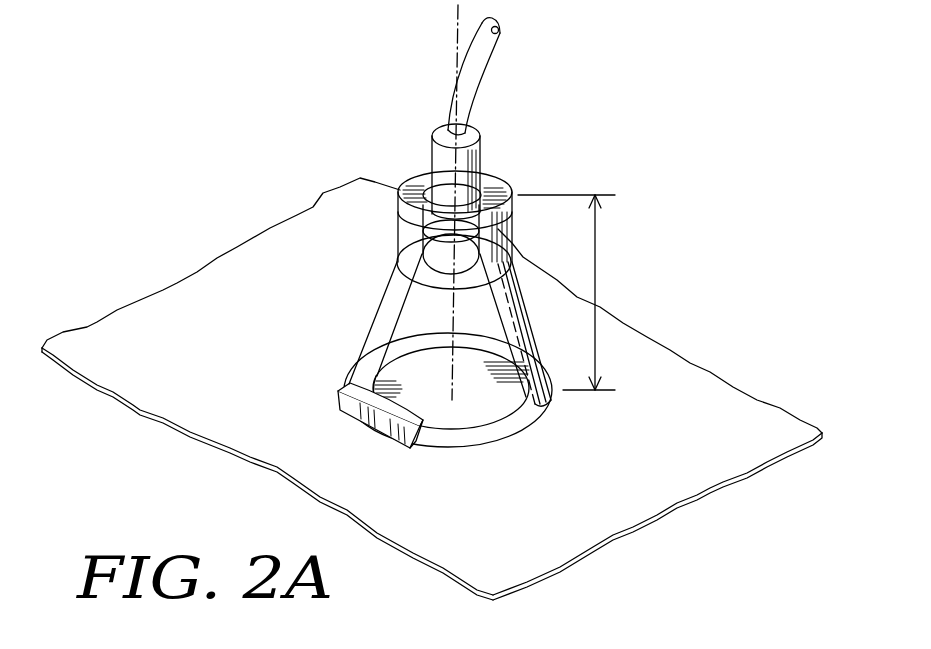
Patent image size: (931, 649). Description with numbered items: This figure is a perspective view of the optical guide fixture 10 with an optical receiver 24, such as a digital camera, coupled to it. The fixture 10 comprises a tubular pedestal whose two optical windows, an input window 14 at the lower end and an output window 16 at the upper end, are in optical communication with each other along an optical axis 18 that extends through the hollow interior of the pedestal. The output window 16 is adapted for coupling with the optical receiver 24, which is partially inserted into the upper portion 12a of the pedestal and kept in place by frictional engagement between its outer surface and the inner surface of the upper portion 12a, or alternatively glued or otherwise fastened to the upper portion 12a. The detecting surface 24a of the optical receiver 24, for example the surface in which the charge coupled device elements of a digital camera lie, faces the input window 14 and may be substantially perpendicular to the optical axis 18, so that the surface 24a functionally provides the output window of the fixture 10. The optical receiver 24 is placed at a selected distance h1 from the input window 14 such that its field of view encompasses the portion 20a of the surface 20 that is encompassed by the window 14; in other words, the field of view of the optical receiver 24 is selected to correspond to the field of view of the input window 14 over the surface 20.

The optical guide fixture 10 is at (328, 167).
The upper portion 12a is at (509, 229).
The input window 14 is at (482, 412).
The output window 16 is at (483, 197).
The optical axis 18 is at (447, 307).
The surface 20 is at (227, 303).
The portion of the surface 20a is at (385, 364).
The optical receiver 24 is at (432, 143).
The detecting surface 24a is at (443, 246).
The selected distance h1 is at (598, 273).